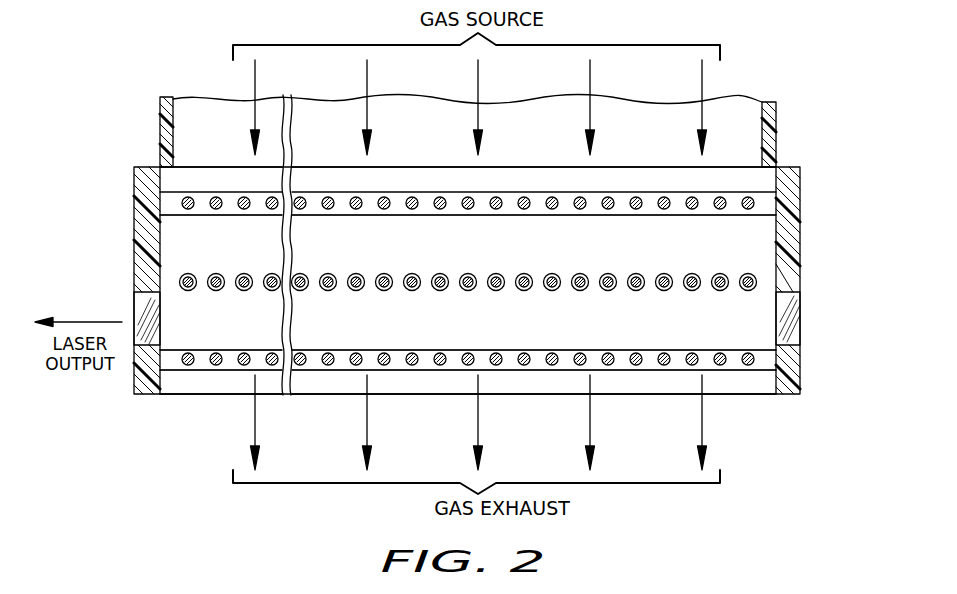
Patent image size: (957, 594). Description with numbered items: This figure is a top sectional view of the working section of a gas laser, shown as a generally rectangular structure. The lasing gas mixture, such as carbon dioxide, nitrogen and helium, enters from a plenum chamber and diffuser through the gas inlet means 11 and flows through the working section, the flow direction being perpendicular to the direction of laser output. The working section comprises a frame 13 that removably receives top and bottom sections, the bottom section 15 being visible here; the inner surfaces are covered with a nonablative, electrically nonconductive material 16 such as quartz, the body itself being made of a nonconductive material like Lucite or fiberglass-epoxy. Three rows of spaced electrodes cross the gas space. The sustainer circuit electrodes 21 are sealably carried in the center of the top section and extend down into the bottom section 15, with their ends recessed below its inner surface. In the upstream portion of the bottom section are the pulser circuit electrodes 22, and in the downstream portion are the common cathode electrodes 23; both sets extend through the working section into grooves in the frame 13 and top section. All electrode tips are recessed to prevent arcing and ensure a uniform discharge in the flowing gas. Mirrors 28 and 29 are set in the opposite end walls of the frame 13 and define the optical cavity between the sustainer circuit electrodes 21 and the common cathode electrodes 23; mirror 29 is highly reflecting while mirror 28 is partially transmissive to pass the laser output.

The gas inlet means 11 is at (160, 118).
The frame 13 is at (134, 228).
The bottom section 15 is at (195, 396).
The nonablative and electrically nonconductive material 16 is at (212, 331).
The sustainer circuit electrodes 21 is at (441, 274).
The pulser circuit electrodes 22 is at (273, 196).
The common cathode electrodes 23 is at (469, 352).
The mirror 28 is at (134, 312).
The mirror 29 is at (800, 318).